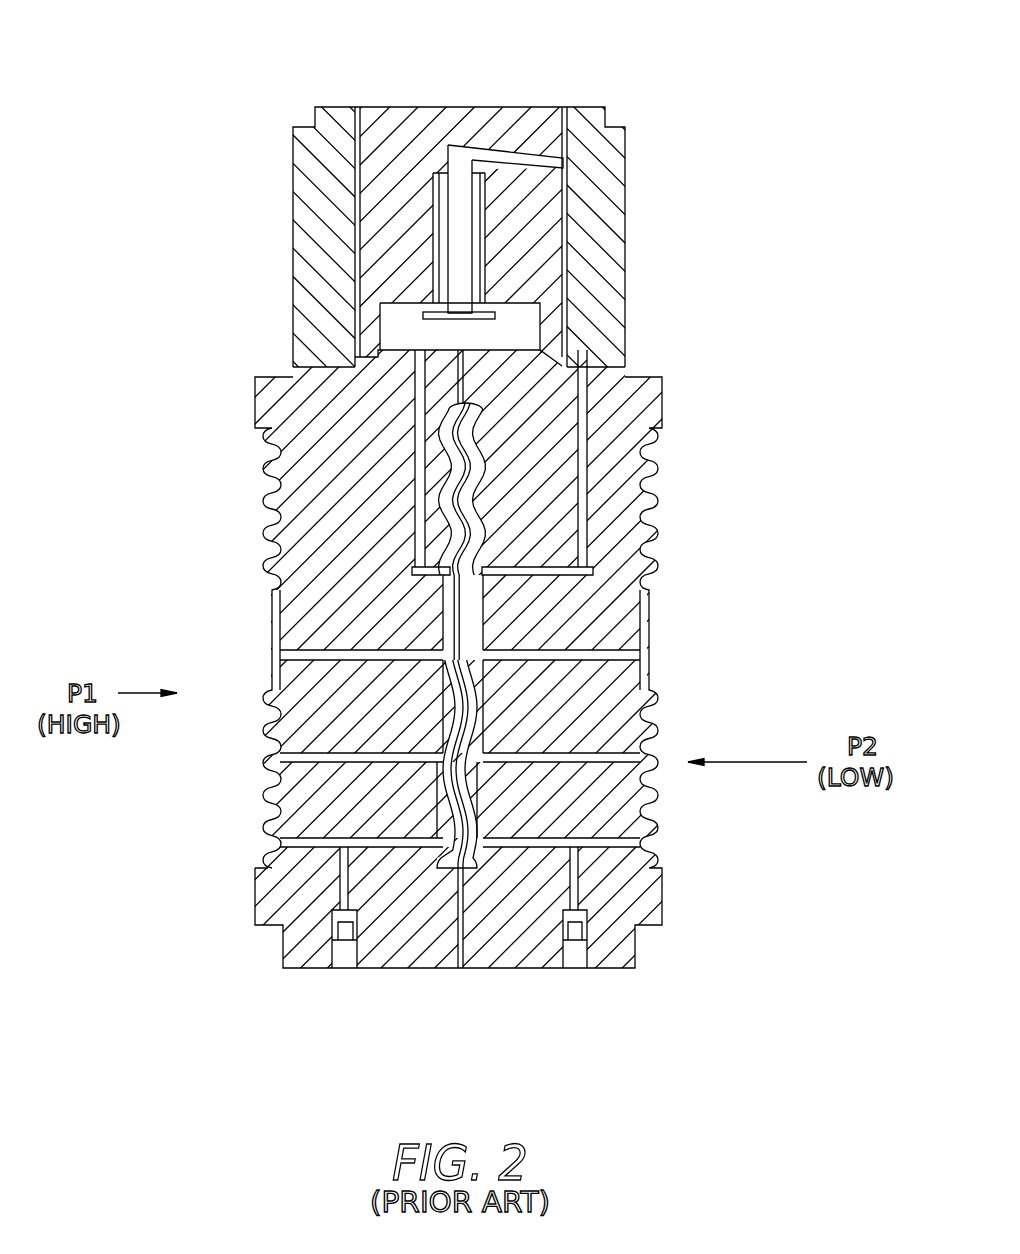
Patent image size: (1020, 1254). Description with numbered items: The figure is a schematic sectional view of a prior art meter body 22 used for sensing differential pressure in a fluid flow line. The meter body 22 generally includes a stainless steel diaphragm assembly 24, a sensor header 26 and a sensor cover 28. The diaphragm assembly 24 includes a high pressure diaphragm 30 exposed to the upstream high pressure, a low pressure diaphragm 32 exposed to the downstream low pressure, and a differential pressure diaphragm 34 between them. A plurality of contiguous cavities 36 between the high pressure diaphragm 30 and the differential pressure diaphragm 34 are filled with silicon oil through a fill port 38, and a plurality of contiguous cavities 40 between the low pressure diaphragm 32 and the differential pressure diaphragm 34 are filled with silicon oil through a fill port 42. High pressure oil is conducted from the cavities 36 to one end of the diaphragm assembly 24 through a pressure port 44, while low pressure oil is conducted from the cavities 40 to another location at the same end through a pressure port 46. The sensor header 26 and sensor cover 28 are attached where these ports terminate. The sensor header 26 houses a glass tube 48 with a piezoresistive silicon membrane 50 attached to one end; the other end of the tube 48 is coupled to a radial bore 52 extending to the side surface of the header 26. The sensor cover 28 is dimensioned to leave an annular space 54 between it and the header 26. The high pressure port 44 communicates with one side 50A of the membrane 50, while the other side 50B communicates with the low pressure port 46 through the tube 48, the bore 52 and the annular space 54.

The meter body 22 is at (510, 563).
The diaphragm assembly 24 is at (662, 875).
The sensor header 26 is at (520, 262).
The sensor cover 28 is at (627, 308).
The high pressure diaphragm 30 is at (263, 497).
The low pressure diaphragm 32 is at (650, 656).
The differential pressure diaphragm 34 is at (463, 628).
The cavities 36 is at (327, 647).
The fill port 38 is at (347, 957).
The cavities 40 is at (472, 687).
The fill port 42 is at (580, 953).
The pressure port 44 is at (415, 412).
The pressure port 46 is at (590, 428).
The glass tube 48 is at (472, 233).
The piezoresistive silicon membrane 50 is at (449, 315).
The side of the membrane 50A is at (400, 327).
The side of the membrane 50B is at (470, 313).
The radial bore 52 is at (493, 143).
The annular space 54 is at (567, 188).